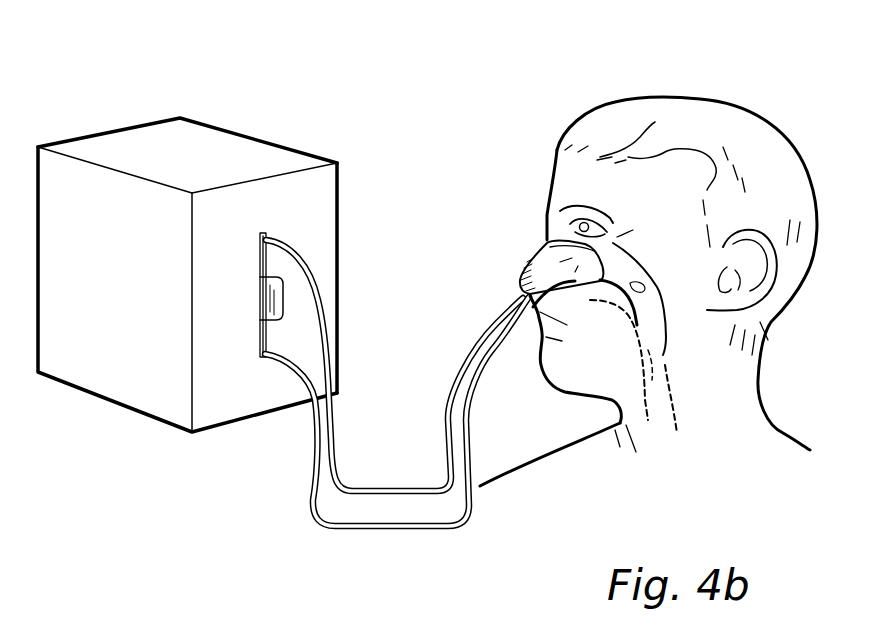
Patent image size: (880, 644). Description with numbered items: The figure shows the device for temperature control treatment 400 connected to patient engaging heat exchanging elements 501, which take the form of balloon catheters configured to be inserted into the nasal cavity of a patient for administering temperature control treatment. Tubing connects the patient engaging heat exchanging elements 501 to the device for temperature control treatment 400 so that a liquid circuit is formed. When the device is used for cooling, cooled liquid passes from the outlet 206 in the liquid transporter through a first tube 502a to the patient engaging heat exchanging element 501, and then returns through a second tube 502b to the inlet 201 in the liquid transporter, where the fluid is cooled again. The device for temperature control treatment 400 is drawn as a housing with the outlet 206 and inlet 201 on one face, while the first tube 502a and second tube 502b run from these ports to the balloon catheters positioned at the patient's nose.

The device for temperature control treatment 400 is at (319, 288).
The inlet 201 is at (263, 353).
The outlet 206 is at (268, 238).
The patient engaging heat exchanging elements 501 is at (543, 243).
The first tube 502a is at (444, 410).
The second tube 502b is at (472, 503).